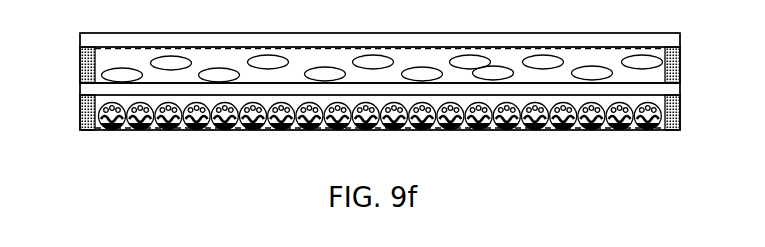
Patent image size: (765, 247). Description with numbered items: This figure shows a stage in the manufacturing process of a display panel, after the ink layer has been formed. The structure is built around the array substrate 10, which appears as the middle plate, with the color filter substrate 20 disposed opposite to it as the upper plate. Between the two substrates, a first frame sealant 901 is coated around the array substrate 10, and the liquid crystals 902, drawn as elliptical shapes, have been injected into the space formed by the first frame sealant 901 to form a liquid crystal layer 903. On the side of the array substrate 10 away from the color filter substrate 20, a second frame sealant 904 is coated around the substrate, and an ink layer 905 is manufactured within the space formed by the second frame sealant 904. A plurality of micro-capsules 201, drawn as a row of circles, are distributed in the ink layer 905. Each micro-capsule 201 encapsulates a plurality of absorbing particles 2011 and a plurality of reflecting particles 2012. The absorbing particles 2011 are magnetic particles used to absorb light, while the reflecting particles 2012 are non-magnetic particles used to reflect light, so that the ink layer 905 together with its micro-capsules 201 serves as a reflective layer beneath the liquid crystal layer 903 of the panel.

The color filter substrate 20 is at (680, 39).
The array substrate 10 is at (680, 84).
The liquid crystal layer 903 is at (376, 58).
The first frame sealant 901 is at (680, 65).
The liquid crystals 902 is at (288, 62).
The ink layer 905 is at (376, 118).
The second frame sealant 904 is at (680, 120).
The micro-capsule 201 is at (284, 128).
The absorbing particles 2011 is at (340, 122).
The reflecting particles 2012 is at (460, 123).